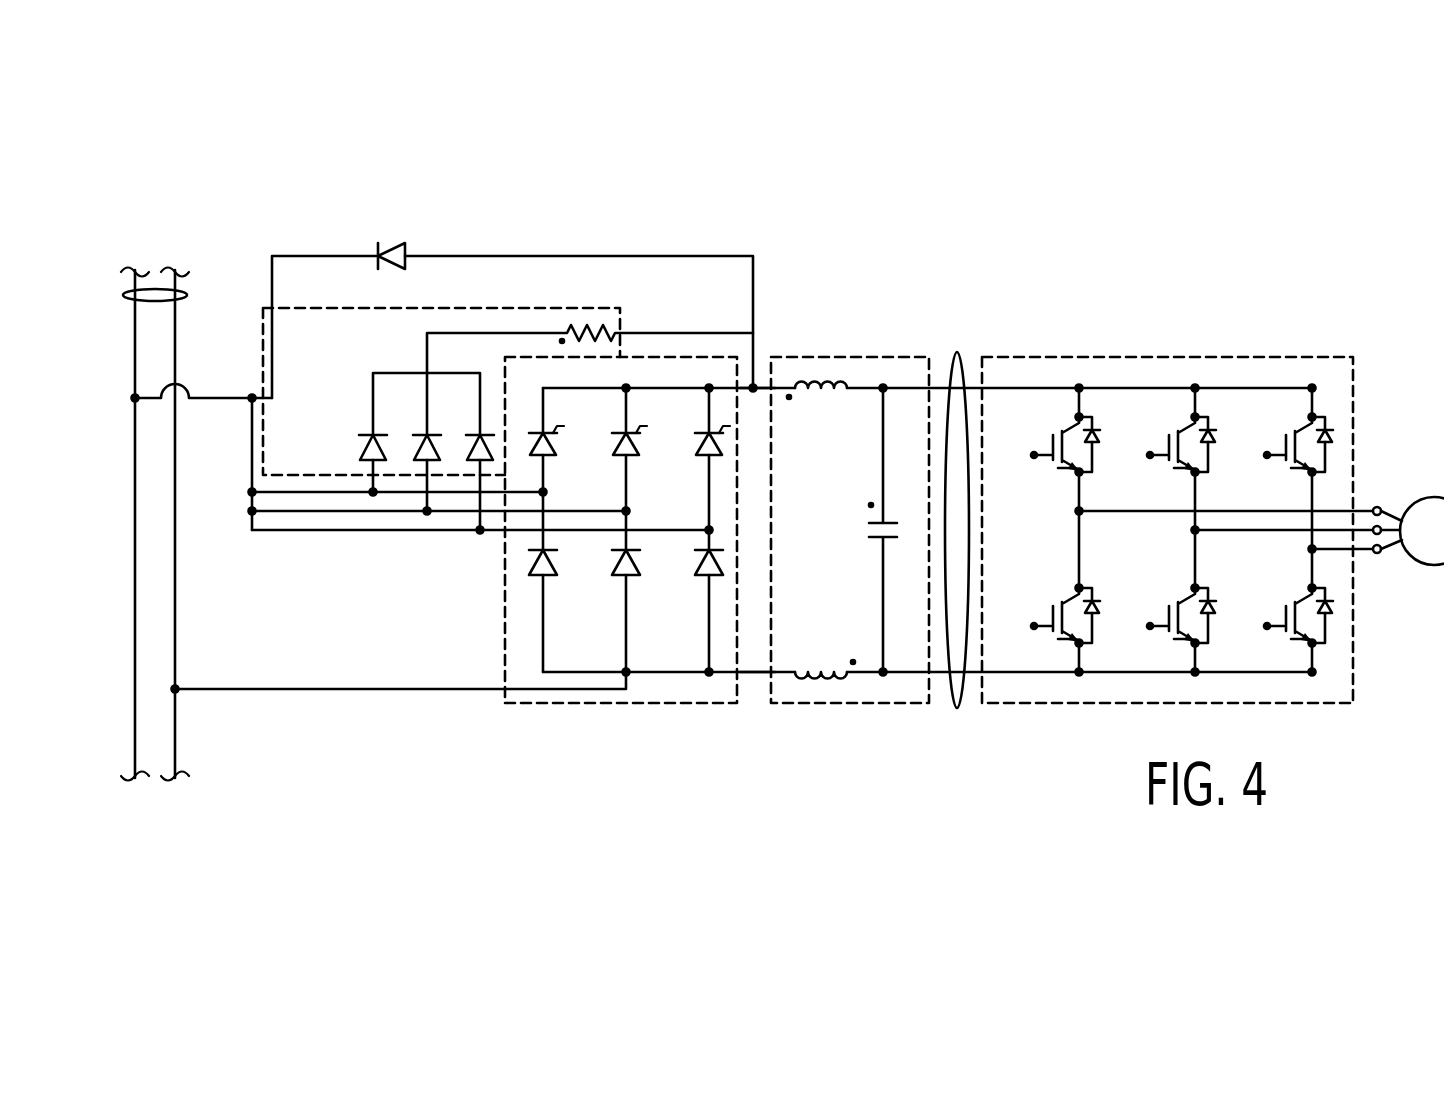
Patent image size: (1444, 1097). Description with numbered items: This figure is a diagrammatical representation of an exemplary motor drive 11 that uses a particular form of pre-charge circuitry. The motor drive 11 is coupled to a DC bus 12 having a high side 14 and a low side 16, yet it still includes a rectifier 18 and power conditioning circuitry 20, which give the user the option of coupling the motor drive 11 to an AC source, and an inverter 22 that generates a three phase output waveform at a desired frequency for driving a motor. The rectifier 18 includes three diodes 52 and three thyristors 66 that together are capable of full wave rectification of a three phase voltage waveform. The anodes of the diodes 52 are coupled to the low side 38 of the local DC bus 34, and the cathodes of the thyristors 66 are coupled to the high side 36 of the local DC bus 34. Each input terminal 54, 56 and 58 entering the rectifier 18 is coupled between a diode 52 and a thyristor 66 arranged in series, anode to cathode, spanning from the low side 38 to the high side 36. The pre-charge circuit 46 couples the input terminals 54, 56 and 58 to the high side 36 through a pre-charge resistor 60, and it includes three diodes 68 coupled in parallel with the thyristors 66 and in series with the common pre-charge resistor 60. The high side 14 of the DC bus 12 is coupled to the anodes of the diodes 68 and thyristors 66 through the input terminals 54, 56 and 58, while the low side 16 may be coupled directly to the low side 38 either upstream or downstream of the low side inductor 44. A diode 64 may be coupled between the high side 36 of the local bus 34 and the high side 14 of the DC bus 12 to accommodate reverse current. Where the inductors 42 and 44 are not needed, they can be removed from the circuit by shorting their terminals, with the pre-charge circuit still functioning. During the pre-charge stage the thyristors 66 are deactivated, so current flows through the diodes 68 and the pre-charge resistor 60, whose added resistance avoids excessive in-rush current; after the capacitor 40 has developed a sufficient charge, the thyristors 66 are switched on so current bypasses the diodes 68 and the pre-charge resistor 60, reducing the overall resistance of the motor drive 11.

The motor drive 11 is at (880, 225).
The DC bus 12 is at (187, 296).
The high side of the DC bus 14 is at (218, 398).
The low side of the DC bus 16 is at (402, 689).
The rectifier 18 is at (692, 357).
The power conditioning circuitry 20 is at (850, 357).
The inverter 22 is at (1165, 357).
The local DC bus 34 is at (958, 368).
The high side of the local DC bus 36 is at (762, 388).
The low side of the local DC bus 38 is at (753, 675).
The capacitor 40 is at (877, 538).
The inductor 42 is at (823, 396).
The low side inductor 44 is at (812, 667).
The pre-charge circuit 46 is at (358, 308).
The diodes 52 is at (675, 610).
The input terminal 54 is at (252, 492).
The input terminal 56 is at (252, 511).
The input terminal 58 is at (253, 533).
The pre-charge resistor 60 is at (572, 327).
The diode 64 is at (388, 244).
The thyristors 66 is at (700, 441).
The diodes 68 is at (476, 432).